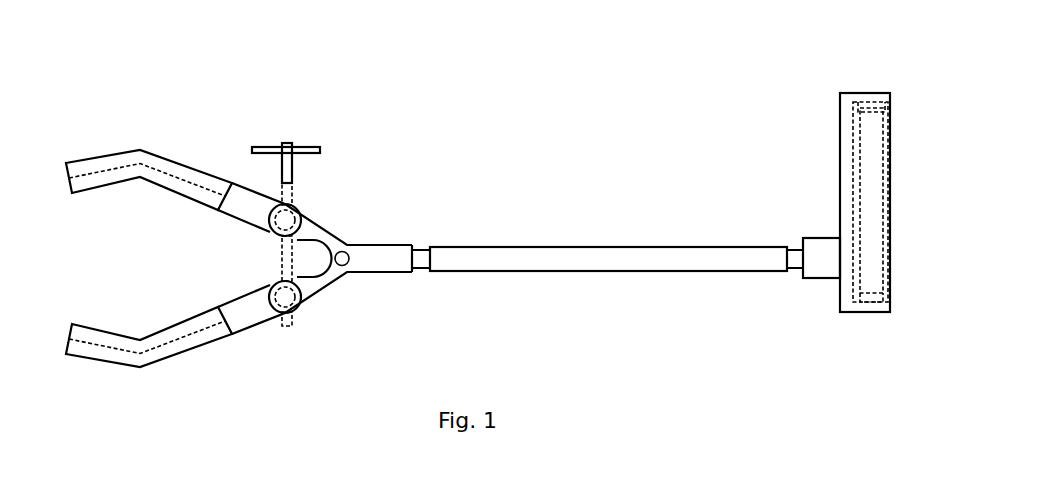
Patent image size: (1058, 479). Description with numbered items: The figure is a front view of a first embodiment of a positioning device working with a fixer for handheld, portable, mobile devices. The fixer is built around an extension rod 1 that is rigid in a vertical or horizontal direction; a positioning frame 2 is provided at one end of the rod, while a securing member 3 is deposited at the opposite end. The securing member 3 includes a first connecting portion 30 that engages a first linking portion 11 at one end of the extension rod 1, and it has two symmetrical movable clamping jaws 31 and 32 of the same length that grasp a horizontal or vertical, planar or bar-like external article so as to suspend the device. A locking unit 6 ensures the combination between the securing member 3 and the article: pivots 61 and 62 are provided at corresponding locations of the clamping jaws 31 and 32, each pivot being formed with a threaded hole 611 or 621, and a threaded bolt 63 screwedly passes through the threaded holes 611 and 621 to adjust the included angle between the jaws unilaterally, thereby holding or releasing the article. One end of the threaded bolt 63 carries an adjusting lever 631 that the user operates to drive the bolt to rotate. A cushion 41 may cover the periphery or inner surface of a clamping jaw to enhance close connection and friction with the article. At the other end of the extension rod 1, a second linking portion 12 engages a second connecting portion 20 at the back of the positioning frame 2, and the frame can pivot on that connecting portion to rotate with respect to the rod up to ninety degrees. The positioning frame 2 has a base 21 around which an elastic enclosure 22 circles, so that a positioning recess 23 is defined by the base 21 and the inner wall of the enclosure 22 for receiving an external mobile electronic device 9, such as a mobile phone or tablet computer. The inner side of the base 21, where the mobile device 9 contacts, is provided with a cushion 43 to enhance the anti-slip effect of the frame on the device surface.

The extension rod 1 is at (609, 245).
The positioning frame 2 is at (846, 201).
The securing member 3 is at (249, 240).
The locking unit 6 is at (291, 218).
The external mobile electronic device 9 is at (885, 273).
The first linking portion 11 is at (422, 262).
The second linking portion 12 is at (795, 270).
The second connecting portion 20 is at (818, 247).
The base 21 is at (845, 167).
The elastic enclosure 22 is at (868, 97).
The positioning recess 23 is at (890, 117).
The first connecting portion 30 is at (382, 255).
The clamping jaw 31 is at (166, 164).
The clamping jaw 32 is at (168, 358).
The cushion 41 is at (122, 335).
The cushion 43 is at (858, 104).
The pivot 61 is at (299, 226).
The pivot 62 is at (271, 308).
The threaded bolt 63 is at (289, 170).
The threaded hole 611 is at (280, 243).
The threaded hole 621 is at (280, 279).
The adjusting lever 631 is at (299, 147).